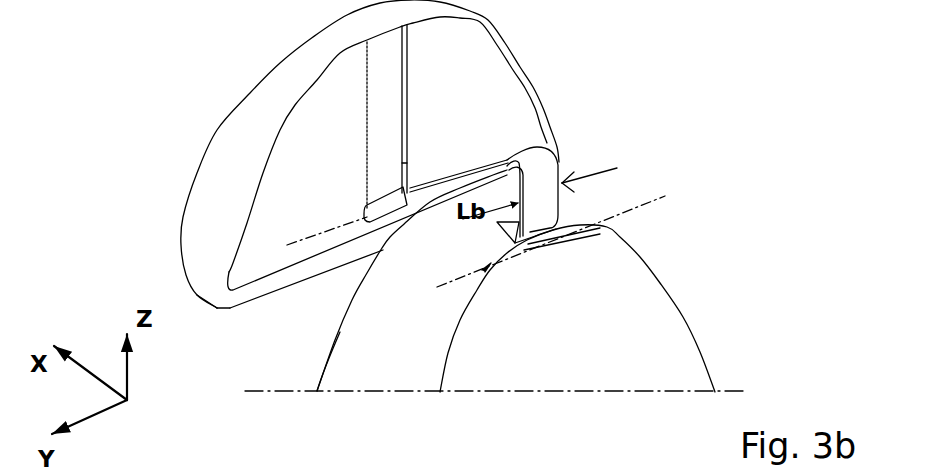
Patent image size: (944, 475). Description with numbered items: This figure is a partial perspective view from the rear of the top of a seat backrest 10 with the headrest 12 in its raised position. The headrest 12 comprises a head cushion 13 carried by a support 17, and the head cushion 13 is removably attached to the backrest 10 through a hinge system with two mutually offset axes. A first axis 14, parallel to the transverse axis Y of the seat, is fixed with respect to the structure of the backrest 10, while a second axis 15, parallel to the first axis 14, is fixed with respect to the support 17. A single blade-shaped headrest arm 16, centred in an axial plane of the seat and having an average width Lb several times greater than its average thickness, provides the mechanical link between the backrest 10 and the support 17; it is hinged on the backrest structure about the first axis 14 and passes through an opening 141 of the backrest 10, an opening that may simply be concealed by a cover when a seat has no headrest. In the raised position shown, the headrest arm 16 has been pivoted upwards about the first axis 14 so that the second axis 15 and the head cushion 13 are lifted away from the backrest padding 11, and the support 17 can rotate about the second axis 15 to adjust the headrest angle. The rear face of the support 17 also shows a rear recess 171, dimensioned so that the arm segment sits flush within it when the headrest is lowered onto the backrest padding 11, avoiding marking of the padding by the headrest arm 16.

The backrest 10 is at (688, 318).
The backrest padding 11 is at (353, 365).
The headrest 12 is at (250, 93).
The head cushion 13 is at (202, 245).
The first axis 14 is at (518, 248).
The opening of the backrest 141 is at (540, 228).
The second axis 15 is at (367, 203).
The headrest arm 16 is at (562, 167).
The support of the head cushion 17 is at (463, 65).
The rear recess 171 is at (383, 110).